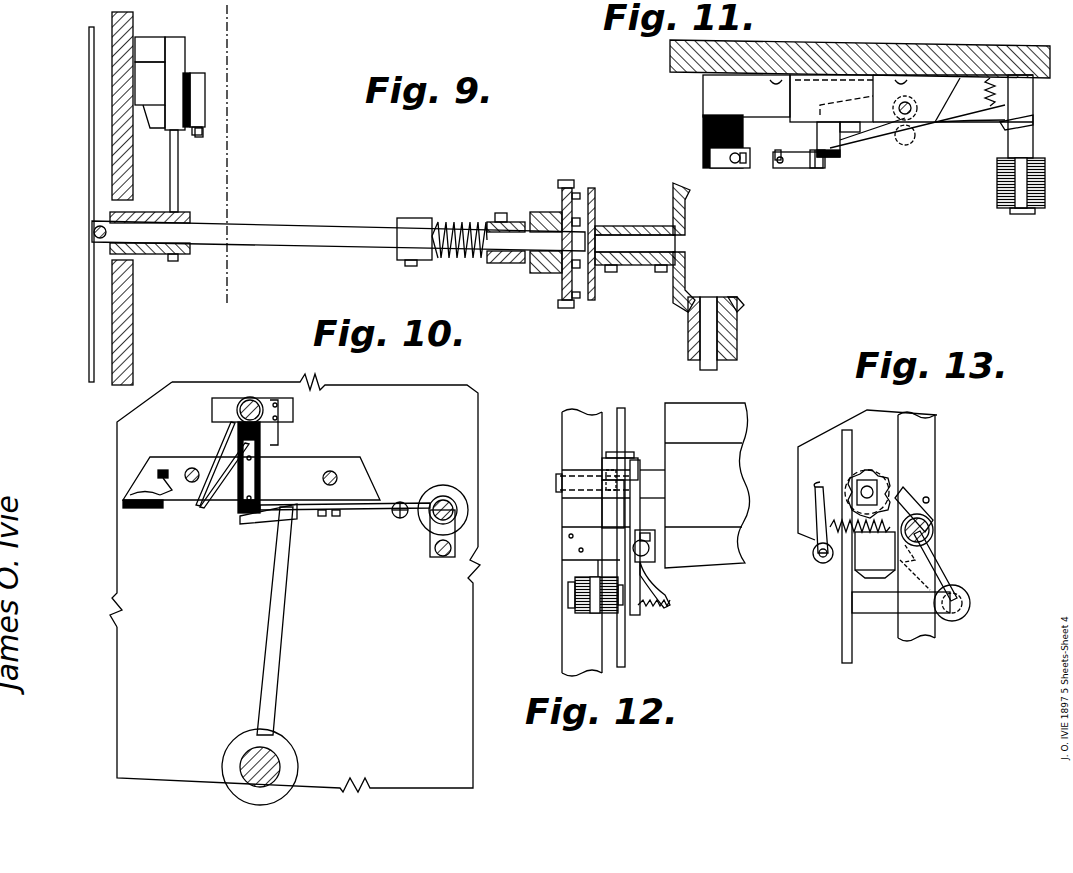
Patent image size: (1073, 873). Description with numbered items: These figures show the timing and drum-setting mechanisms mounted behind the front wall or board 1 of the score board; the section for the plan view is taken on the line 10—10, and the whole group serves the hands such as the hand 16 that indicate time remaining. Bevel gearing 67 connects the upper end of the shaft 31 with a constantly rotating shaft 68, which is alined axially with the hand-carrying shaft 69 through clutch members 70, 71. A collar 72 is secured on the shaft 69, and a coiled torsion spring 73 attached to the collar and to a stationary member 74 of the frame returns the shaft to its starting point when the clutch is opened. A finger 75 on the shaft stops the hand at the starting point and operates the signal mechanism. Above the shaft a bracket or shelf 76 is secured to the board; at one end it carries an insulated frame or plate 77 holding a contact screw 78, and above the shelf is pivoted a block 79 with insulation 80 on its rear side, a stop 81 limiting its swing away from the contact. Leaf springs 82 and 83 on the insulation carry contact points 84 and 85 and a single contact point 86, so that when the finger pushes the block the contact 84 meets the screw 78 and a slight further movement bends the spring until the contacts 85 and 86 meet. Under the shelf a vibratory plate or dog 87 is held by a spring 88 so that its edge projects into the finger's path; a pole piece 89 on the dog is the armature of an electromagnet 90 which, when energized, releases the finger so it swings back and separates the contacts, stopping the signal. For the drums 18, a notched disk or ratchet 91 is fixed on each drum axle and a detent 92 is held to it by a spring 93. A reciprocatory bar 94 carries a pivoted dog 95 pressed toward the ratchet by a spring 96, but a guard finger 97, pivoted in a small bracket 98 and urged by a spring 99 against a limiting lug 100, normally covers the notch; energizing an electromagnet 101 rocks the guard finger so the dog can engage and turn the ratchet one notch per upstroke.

In FIG. 9, the front wall 1 is at (128, 338).
In FIG. 11, the front wall 1 is at (918, 42).
In FIG. 10, the front wall 1 is at (117, 687).
In FIG. 9, the seconds dial 10 is at (205, 13).
In FIG. 9, the hand 16 is at (88, 300).
In FIG. 12, the drum 18 is at (680, 405).
In FIG. 13, the drum 18 is at (830, 436).
In FIG. 9, the shaft 31 is at (720, 343).
In FIG. 9, the bevel gearing 67 is at (688, 298).
In FIG. 9, the shaft 68 is at (645, 228).
In FIG. 9, the hand-carrying shaft 69 is at (310, 228).
In FIG. 10, the hand-carrying shaft 69 is at (252, 752).
In FIG. 9, the clutch member 70 is at (595, 190).
In FIG. 9, the clutch member 71 is at (566, 190).
In FIG. 9, the collar 72 is at (422, 220).
In FIG. 9, the coiled torsion spring 73 is at (463, 222).
In FIG. 9, the stationary member 74 is at (506, 264).
In FIG. 9, the finger 75 is at (178, 182).
In FIG. 11, the finger 75 is at (905, 145).
In FIG. 10, the finger 75 is at (282, 640).
In FIG. 9, the bracket or shelf 76 is at (140, 102).
In FIG. 11, the bracket or shelf 76 is at (703, 98).
In FIG. 10, the bracket or shelf 76 is at (310, 462).
In FIG. 11, the frame or plate 77 is at (718, 168).
In FIG. 10, the frame or plate 77 is at (130, 490).
In FIG. 11, the contact screw 78 is at (740, 166).
In FIG. 10, the contact screw 78 is at (175, 470).
In FIG. 9, the block 79 is at (182, 58).
In FIG. 11, the block 79 is at (850, 133).
In FIG. 10, the block 79 is at (248, 398).
In FIG. 9, the insulation 80 is at (190, 95).
In FIG. 11, the insulation 80 is at (818, 148).
In FIG. 10, the insulation 80 is at (262, 473).
In FIG. 11, the stop 81 is at (860, 135).
In FIG. 10, the stop 81 is at (280, 431).
In FIG. 9, the leaf spring 82 is at (205, 112).
In FIG. 11, the leaf spring 82 is at (790, 168).
In FIG. 10, the leaf spring 82 is at (224, 441).
In FIG. 11, the leaf spring 83 is at (818, 168).
In FIG. 10, the leaf spring 83 is at (224, 511).
In FIG. 9, the contact point 84 is at (203, 135).
In FIG. 11, the contact point 84 is at (776, 155).
In FIG. 10, the contact point 84 is at (192, 506).
In FIG. 10, the contact point 85 is at (200, 510).
In FIG. 10, the contact point 86 is at (214, 514).
In FIG. 9, the vibratory plate or dog 87 is at (152, 132).
In FIG. 11, the vibratory plate or dog 87 is at (944, 118).
In FIG. 10, the vibratory plate or dog 87 is at (355, 511).
In FIG. 11, the spring 88 is at (998, 92).
In FIG. 10, the spring 88 is at (410, 488).
In FIG. 11, the pole piece 89 is at (1025, 128).
In FIG. 11, the electromagnet 90 is at (1000, 196).
In FIG. 10, the electromagnet 90 is at (432, 536).
In FIG. 12, the notched disk or ratchet 91 is at (612, 458).
In FIG. 13, the notched disk or ratchet 91 is at (872, 472).
In FIG. 13, the detent 92 is at (813, 509).
In FIG. 13, the spring 93 is at (870, 534).
In FIG. 12, the reciprocatory bar 94 is at (626, 661).
In FIG. 13, the reciprocatory bar 94 is at (935, 636).
In FIG. 12, the pivoted dog 95 is at (605, 507).
In FIG. 13, the pivoted dog 95 is at (934, 493).
In FIG. 12, the spring 96 is at (614, 540).
In FIG. 13, the spring 96 is at (936, 513).
In FIG. 12, the guard finger 97 is at (646, 514).
In FIG. 13, the guard finger 97 is at (900, 490).
In FIG. 12, the bracket 98 is at (656, 548).
In FIG. 13, the bracket 98 is at (935, 545).
In FIG. 12, the spring 99 is at (652, 612).
In FIG. 12, the lug 100 is at (668, 590).
In FIG. 12, the electromagnet 101 is at (585, 615).
In FIG. 13, the electromagnet 101 is at (970, 604).